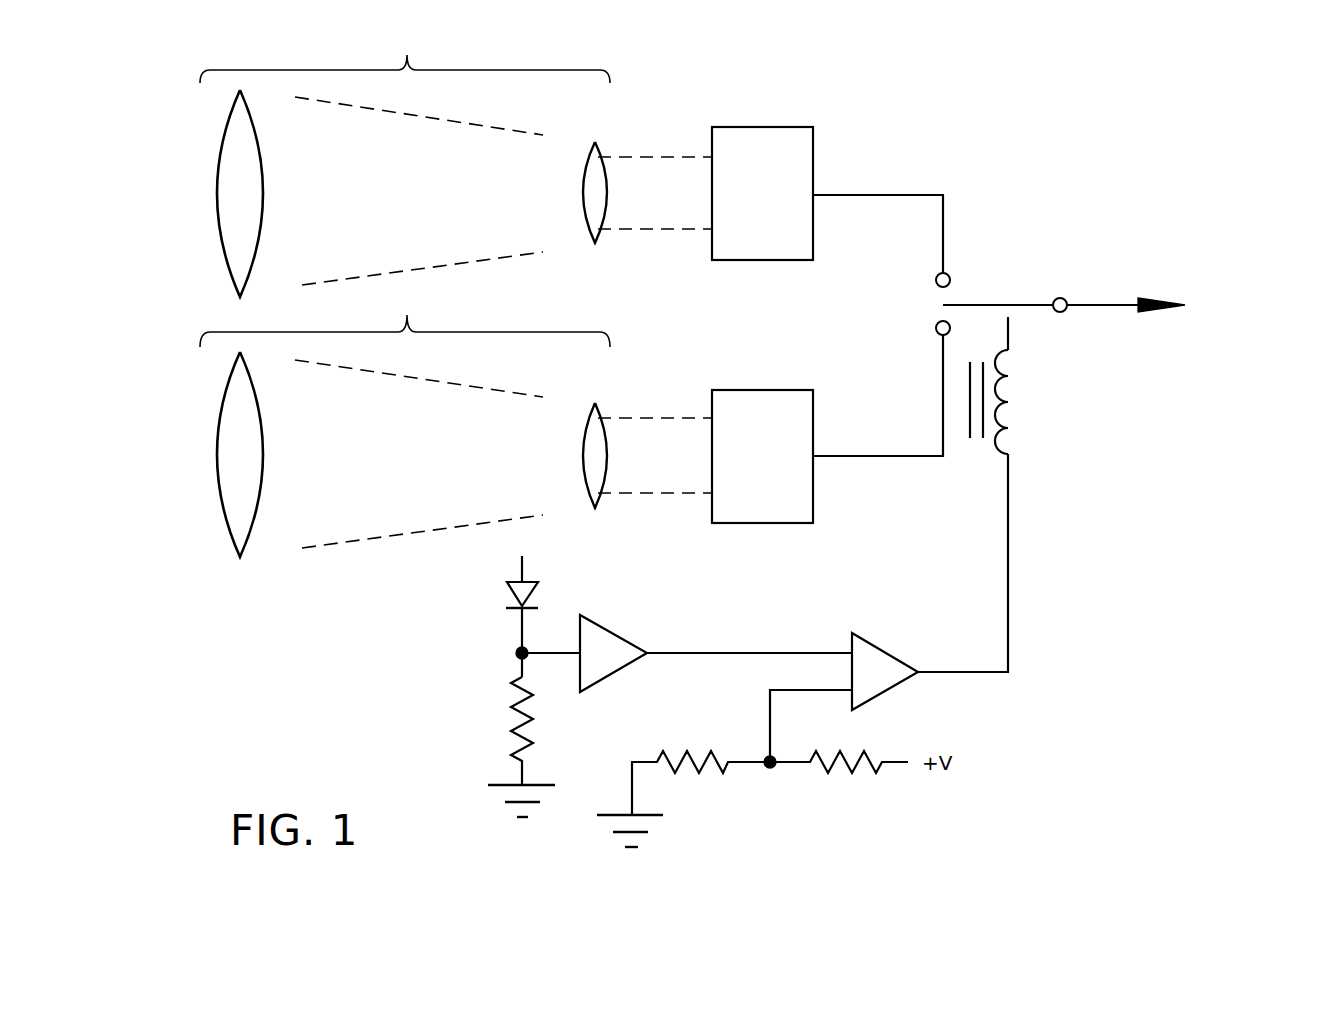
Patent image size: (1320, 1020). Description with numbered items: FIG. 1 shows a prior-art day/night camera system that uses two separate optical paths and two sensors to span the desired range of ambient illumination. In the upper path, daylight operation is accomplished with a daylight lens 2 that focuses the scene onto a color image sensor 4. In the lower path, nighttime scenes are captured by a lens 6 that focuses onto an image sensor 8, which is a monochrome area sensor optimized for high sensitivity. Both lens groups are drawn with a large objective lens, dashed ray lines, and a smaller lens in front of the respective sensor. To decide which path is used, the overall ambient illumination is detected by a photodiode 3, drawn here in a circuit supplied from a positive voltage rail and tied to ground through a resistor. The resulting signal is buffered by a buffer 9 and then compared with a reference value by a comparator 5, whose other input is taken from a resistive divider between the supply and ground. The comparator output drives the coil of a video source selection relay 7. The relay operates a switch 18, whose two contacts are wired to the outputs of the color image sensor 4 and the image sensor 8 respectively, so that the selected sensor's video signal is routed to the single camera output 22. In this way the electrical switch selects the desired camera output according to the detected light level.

The daylight lens 2 is at (456, 163).
The lens 6 is at (456, 423).
The color image sensor 4 is at (732, 125).
The image sensor 8 is at (728, 390).
The relay switch 18 is at (983, 278).
The output 22 is at (1209, 318).
The video source selection relay 7 is at (1015, 405).
The photodiode 3 is at (420, 590).
The buffer 9 is at (607, 628).
The comparator 5 is at (880, 645).